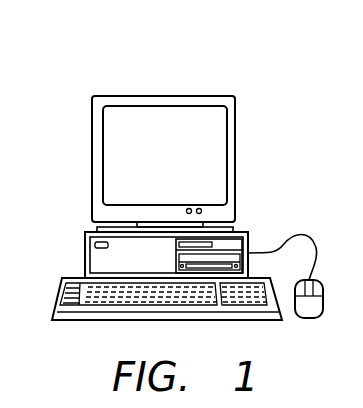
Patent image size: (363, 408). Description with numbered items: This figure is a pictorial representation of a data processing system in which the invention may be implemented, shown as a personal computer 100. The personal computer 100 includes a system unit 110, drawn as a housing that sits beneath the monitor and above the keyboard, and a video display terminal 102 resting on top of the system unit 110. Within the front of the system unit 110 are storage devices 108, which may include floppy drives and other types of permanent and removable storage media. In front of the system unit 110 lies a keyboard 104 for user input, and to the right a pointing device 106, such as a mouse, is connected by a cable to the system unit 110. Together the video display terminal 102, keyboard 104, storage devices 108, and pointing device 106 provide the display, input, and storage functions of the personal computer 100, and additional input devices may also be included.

The personal computer 100 is at (162, 66).
The video display terminal 102 is at (218, 158).
The keyboard 104 is at (80, 300).
The pointing device 106 is at (308, 318).
The storage devices 108 is at (223, 250).
The system unit 110 is at (86, 253).